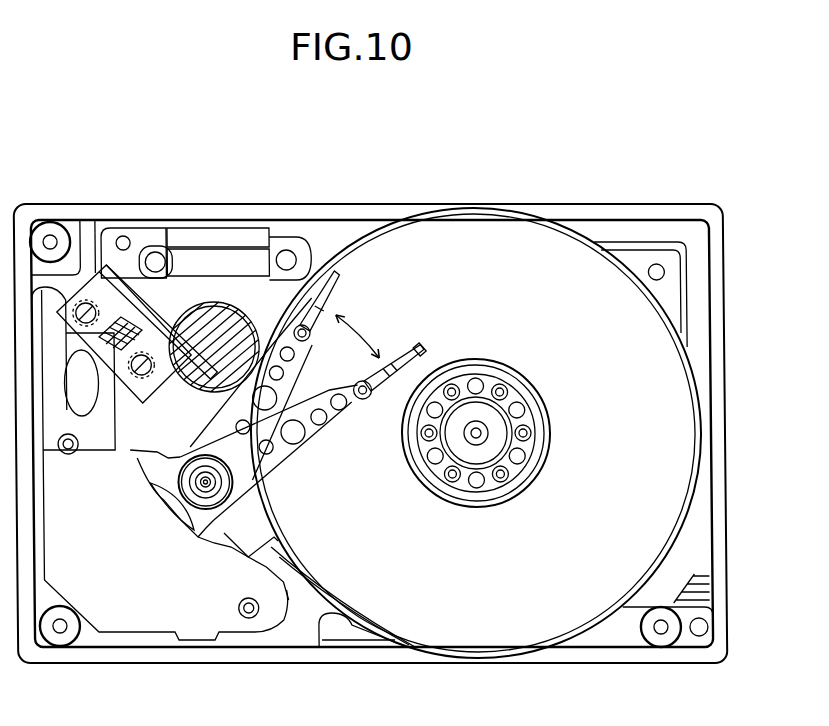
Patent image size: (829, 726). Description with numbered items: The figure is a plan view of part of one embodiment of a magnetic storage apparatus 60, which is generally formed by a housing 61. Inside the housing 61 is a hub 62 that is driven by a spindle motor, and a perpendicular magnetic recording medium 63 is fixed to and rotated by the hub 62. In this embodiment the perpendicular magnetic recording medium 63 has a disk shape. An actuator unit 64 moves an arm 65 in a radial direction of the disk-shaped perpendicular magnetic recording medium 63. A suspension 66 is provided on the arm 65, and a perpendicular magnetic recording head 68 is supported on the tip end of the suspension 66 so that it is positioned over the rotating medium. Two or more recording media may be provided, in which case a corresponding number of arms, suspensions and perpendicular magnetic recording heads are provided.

The magnetic storage apparatus 60 is at (134, 153).
The housing 61 is at (371, 433).
The hub 62 is at (528, 488).
The perpendicular magnetic recording medium 63 is at (677, 400).
The actuator unit 64 is at (227, 512).
The arm 65 is at (287, 462).
The suspension 66 is at (422, 347).
The perpendicular magnetic recording head 68 is at (420, 348).